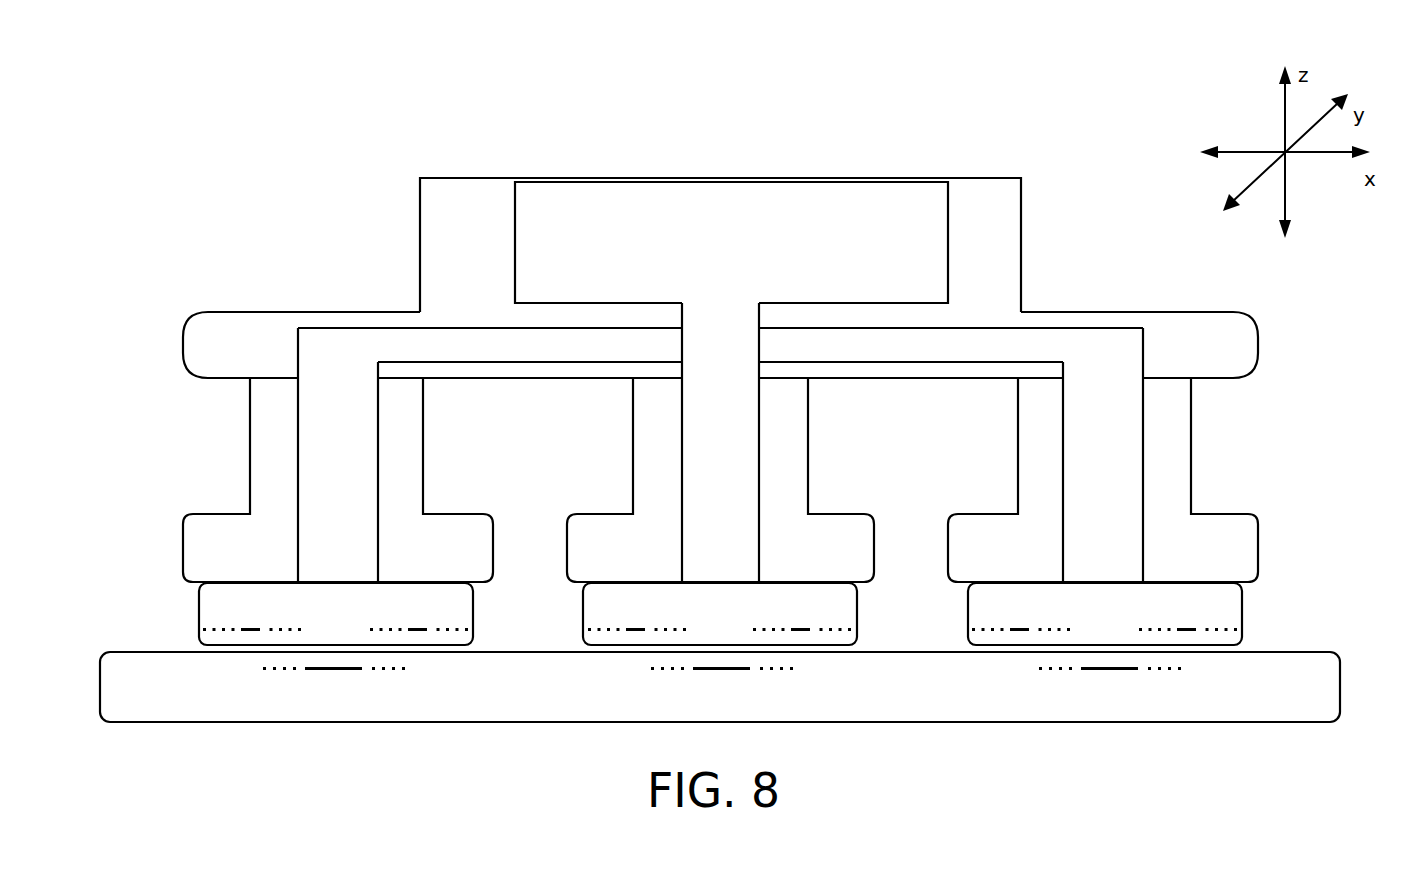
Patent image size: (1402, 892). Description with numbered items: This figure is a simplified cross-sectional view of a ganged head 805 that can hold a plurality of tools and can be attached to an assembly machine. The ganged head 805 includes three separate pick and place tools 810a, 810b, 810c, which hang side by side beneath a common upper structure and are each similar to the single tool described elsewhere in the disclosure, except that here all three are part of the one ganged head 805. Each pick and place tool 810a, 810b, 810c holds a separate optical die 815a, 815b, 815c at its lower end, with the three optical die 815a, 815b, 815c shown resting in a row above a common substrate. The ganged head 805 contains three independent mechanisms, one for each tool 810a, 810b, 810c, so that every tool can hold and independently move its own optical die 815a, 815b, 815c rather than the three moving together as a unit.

The ganged head 805 is at (349, 160).
The pick and place tool 810a is at (183, 537).
The pick and place tool 810b is at (567, 527).
The pick and place tool 810c is at (946, 540).
The optical die 815a is at (199, 603).
The optical die 815b is at (583, 609).
The optical die 815c is at (968, 609).